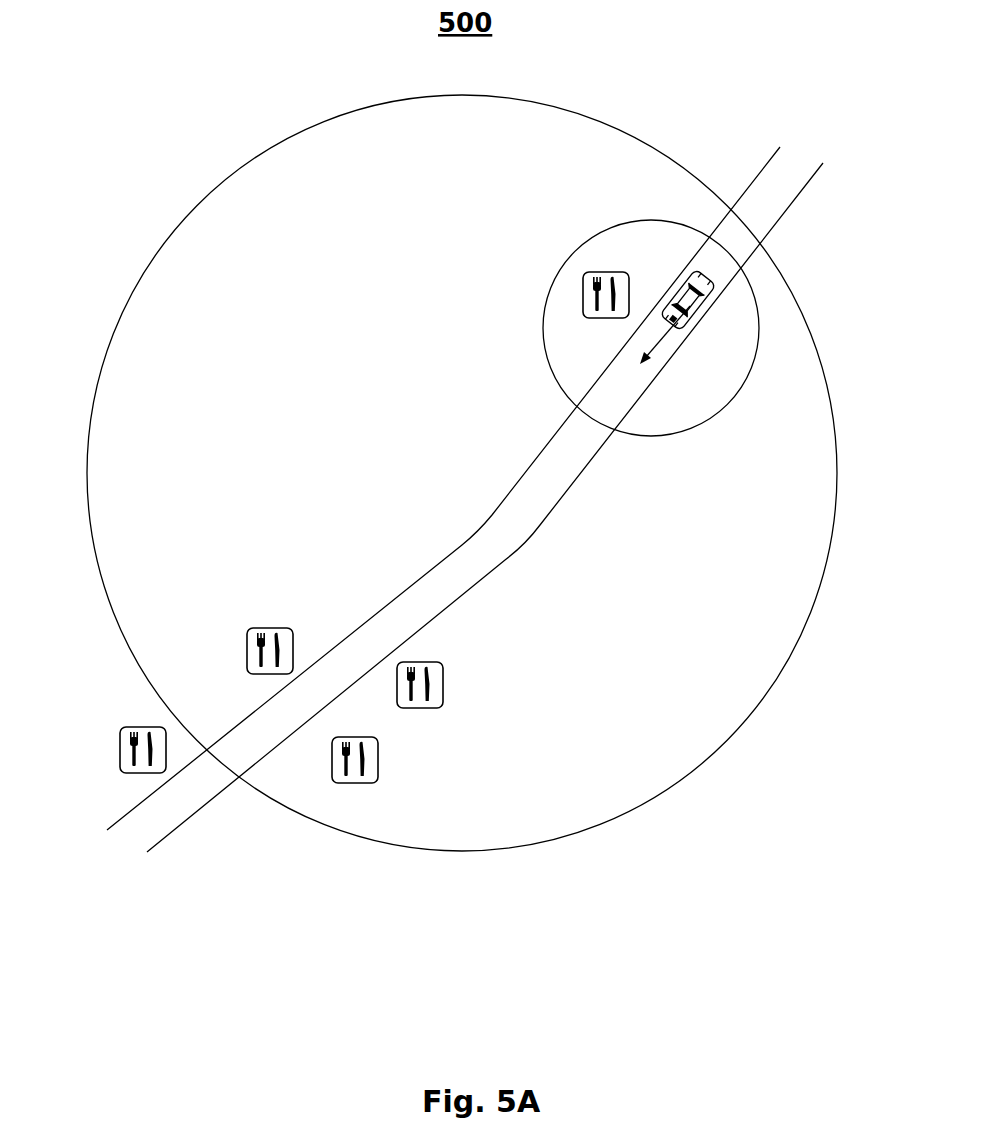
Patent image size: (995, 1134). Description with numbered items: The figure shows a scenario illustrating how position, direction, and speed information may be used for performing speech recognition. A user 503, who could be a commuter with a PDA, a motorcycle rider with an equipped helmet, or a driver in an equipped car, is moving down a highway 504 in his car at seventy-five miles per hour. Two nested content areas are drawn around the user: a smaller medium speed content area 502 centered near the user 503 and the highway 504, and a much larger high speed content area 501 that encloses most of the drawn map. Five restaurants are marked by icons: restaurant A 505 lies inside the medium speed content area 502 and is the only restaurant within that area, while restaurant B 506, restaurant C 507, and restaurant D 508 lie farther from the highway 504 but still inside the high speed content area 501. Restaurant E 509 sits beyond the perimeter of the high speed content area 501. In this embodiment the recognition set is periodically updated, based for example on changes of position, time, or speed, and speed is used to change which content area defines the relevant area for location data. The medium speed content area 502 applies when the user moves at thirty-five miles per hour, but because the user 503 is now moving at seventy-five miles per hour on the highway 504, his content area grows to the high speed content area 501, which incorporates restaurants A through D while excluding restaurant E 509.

The high speed content area 501 is at (258, 160).
The medium speed content area 502 is at (592, 241).
The user 503 is at (713, 292).
The highway 504 is at (770, 193).
The restaurant A 505 is at (590, 318).
The restaurant B 506 is at (270, 628).
The restaurant C 507 is at (448, 673).
The restaurant D 508 is at (380, 748).
The restaurant E 509 is at (118, 730).